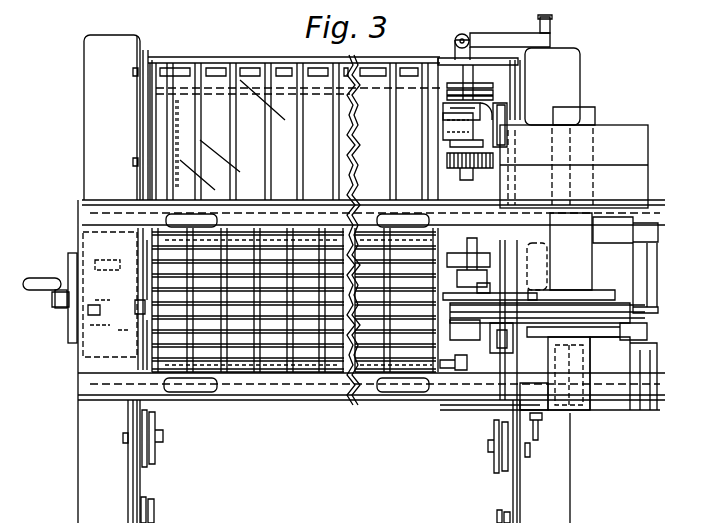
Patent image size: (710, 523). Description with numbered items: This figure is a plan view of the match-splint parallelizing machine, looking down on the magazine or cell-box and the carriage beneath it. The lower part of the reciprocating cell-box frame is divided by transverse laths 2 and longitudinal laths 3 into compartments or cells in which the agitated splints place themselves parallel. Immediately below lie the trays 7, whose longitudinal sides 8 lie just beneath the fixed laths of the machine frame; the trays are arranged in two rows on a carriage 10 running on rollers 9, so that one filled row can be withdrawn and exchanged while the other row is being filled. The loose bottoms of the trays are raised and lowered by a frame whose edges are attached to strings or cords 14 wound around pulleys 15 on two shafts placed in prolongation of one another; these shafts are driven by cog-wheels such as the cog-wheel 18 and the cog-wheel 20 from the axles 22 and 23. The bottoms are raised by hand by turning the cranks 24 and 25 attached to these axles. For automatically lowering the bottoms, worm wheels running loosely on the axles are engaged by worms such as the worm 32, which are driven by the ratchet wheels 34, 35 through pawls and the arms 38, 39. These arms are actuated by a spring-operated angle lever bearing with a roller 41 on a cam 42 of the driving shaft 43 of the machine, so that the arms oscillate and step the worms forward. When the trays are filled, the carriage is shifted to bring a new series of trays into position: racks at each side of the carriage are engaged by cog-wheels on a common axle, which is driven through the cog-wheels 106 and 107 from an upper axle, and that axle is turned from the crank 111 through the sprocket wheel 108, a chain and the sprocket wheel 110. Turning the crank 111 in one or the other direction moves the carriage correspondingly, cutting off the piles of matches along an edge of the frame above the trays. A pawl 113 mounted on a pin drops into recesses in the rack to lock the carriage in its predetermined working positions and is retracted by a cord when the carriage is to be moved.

The transverse laths 2 is at (290, 340).
The longitudinal laths 3 is at (263, 343).
The trays 7 is at (248, 145).
The longitudinal sides of the trays 8 is at (300, 110).
The rollers 9 is at (150, 507).
The carriage 10 is at (266, 58).
The strings or cords 14 is at (315, 415).
The pulleys 15 is at (490, 92).
The cog-wheel 18 is at (492, 163).
The cog-wheel 20 is at (492, 283).
The axle 22 is at (470, 85).
The axle 23 is at (463, 365).
The crank 24 is at (503, 37).
The crank 25 is at (537, 434).
The worm 32 is at (443, 126).
The ratchet wheel 34 is at (507, 115).
The ratchet wheel 35 is at (510, 342).
The arm 38 is at (503, 102).
The arm 39 is at (502, 365).
The roller 41 is at (648, 336).
The cam 42 is at (613, 337).
The driving shaft 43 is at (600, 115).
The cog-wheel 106 is at (92, 313).
The cog-wheel 107 is at (96, 268).
The sprocket wheel 108 is at (73, 255).
The sprocket wheel 110 is at (68, 290).
The crank 111 is at (40, 297).
The pawl 113 is at (137, 307).